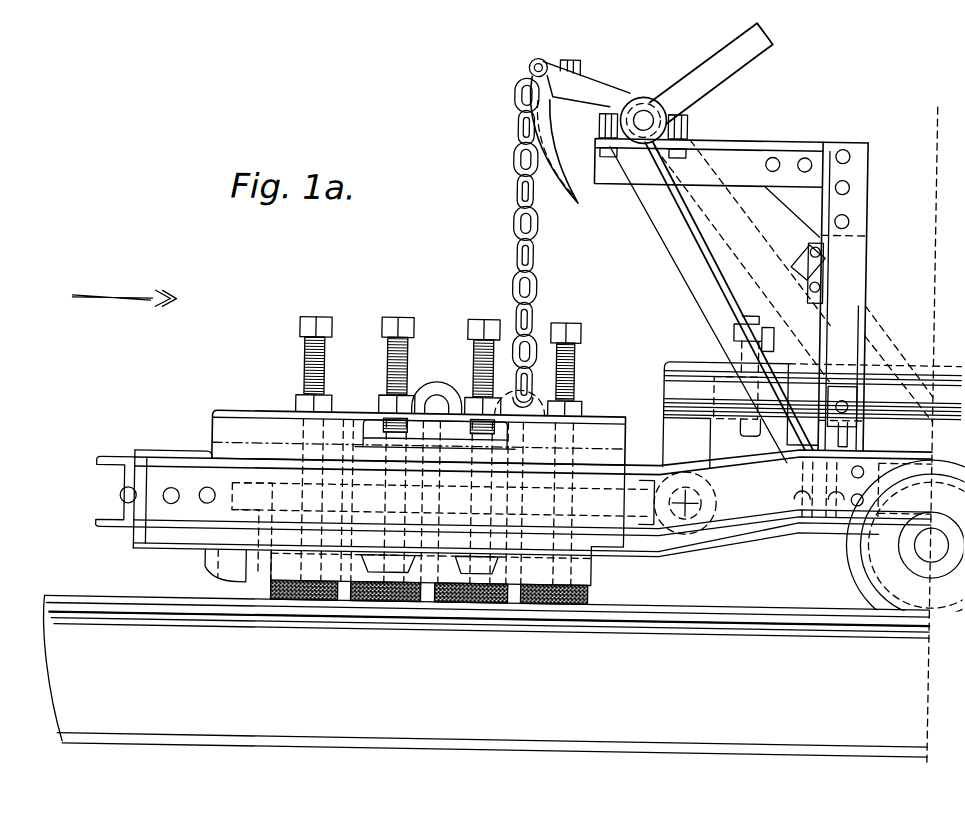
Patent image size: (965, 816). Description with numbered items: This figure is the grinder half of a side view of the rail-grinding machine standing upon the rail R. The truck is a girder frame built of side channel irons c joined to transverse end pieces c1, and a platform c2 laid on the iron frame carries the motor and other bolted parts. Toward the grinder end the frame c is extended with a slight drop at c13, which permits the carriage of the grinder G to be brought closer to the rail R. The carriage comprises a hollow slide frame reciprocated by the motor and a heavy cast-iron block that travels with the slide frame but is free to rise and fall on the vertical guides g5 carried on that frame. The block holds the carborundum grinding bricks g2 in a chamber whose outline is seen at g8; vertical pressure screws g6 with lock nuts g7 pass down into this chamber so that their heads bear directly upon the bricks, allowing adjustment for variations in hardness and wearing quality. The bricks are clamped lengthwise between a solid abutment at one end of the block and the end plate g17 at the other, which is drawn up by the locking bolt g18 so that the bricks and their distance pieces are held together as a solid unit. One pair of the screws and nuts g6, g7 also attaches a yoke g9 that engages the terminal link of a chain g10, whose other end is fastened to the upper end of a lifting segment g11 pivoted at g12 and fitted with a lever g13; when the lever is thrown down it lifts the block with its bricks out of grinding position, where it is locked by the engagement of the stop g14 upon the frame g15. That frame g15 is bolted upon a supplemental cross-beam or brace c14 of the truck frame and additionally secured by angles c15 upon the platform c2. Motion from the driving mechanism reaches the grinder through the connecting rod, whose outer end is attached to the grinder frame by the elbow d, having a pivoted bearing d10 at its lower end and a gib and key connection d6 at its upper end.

The rail R is at (485, 676).
The side channel irons c is at (532, 500).
The transverse end pieces c1 is at (118, 488).
The platform c2 is at (860, 445).
The drop in frame c13 is at (839, 491).
The supplemental cross-beam or brace c14 is at (768, 546).
The angles c15 is at (868, 414).
The elbow d is at (671, 361).
The gib and key connection d6 is at (763, 356).
The pivoted bearing d10 is at (684, 515).
The grinder G is at (419, 420).
The grinding bricks g2 is at (283, 605).
The vertical guides g5 is at (592, 475).
The vertical pressure screws g6 is at (302, 374).
The lock nuts g7 is at (298, 407).
The chamber for the bricks g8 is at (287, 484).
The yoke g9 is at (530, 388).
The chain g10 is at (511, 246).
The lifting segment g11 is at (578, 131).
The pivot g12 is at (639, 110).
The lever g13 is at (742, 62).
The stop g14 is at (797, 258).
The frame g15 is at (736, 154).
The end plate g17 is at (261, 576).
The locking bolt g18 is at (195, 569).